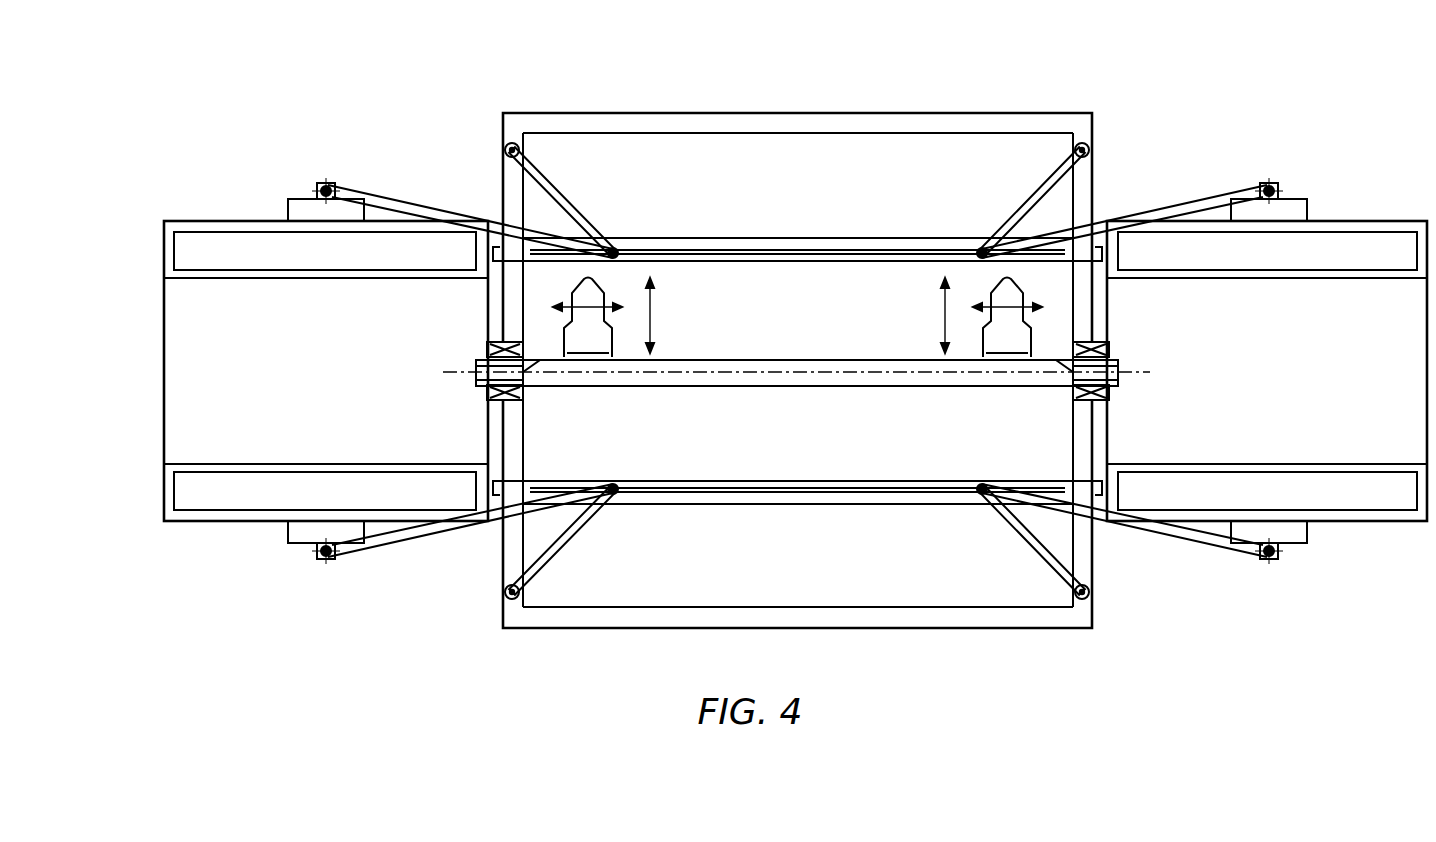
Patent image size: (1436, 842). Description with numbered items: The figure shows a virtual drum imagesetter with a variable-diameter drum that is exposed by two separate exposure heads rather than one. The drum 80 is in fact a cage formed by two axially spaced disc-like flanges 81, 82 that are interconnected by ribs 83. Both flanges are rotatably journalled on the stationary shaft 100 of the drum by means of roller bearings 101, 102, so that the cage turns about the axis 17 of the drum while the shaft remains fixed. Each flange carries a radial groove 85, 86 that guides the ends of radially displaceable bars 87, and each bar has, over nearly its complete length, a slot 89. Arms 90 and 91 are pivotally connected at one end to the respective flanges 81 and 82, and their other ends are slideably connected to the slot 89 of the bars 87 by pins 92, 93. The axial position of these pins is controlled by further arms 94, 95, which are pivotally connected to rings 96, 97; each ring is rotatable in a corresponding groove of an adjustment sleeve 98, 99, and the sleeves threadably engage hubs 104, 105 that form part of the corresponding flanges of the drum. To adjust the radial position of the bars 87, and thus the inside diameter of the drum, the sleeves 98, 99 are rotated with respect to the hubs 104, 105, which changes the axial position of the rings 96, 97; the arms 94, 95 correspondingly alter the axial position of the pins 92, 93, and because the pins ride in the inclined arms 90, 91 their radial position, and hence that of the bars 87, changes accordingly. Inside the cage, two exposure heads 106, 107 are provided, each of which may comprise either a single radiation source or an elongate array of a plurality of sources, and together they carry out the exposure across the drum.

The axis 17 is at (455, 372).
The drum 80 is at (831, 82).
The flange 81 is at (512, 325).
The flange 82 is at (1088, 318).
The ribs 83 is at (708, 122).
The radial groove 85 is at (497, 208).
The radial groove 86 is at (1088, 200).
The bars 87 is at (708, 250).
The slot 89 is at (880, 250).
The arm 90 is at (575, 203).
The arm 91 is at (1045, 185).
The pin 92 is at (618, 240).
The pin 93 is at (985, 238).
The arm 94 is at (395, 205).
The arm 95 is at (1155, 200).
The ring 96 is at (340, 183).
The ring 97 is at (1268, 181).
The adjustment sleeve 98 is at (300, 200).
The adjustment sleeve 99 is at (1297, 200).
The stationary shaft 100 is at (828, 360).
The roller bearing 101 is at (487, 390).
The roller bearing 102 is at (1110, 388).
The hub 104 is at (218, 225).
The hub 105 is at (1380, 230).
The exposure head 106 is at (610, 330).
The exposure head 107 is at (985, 330).